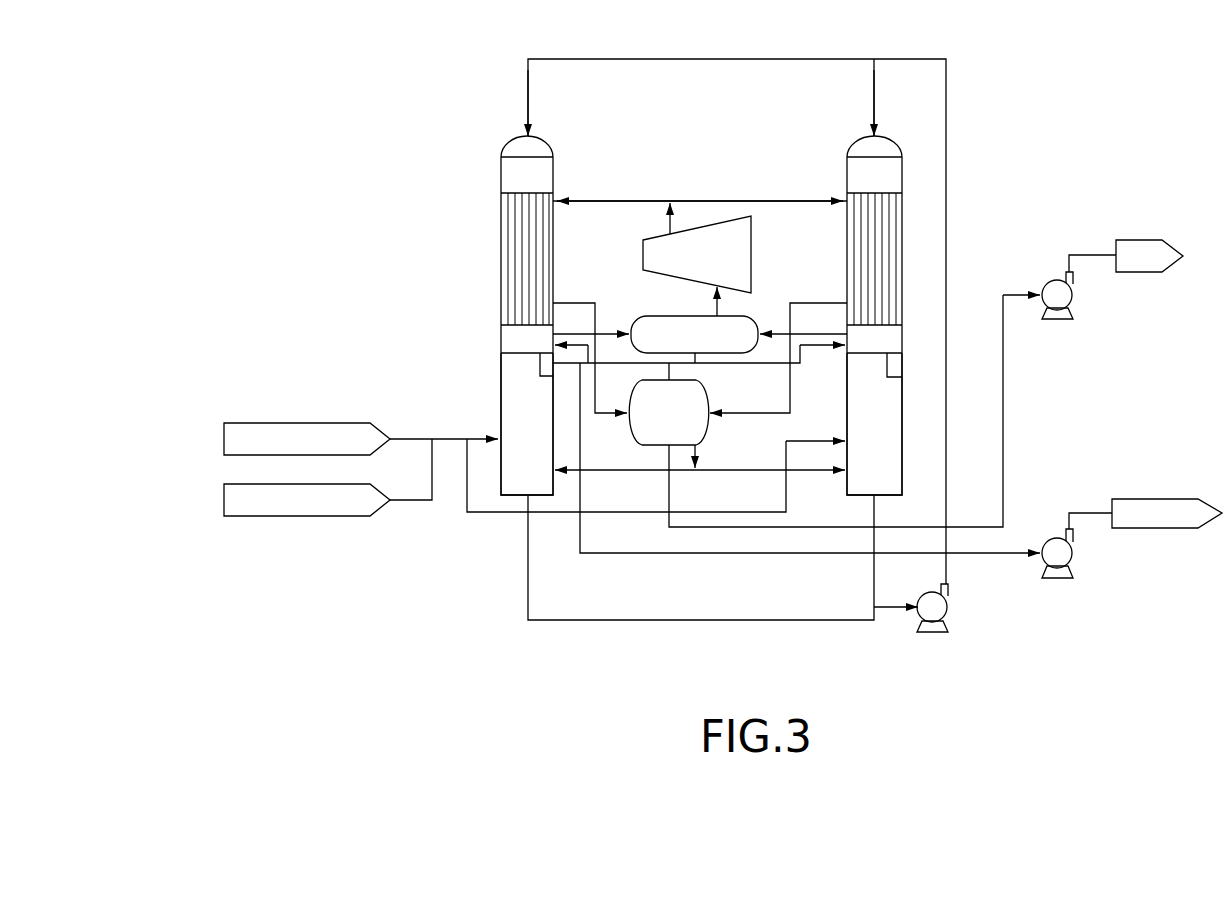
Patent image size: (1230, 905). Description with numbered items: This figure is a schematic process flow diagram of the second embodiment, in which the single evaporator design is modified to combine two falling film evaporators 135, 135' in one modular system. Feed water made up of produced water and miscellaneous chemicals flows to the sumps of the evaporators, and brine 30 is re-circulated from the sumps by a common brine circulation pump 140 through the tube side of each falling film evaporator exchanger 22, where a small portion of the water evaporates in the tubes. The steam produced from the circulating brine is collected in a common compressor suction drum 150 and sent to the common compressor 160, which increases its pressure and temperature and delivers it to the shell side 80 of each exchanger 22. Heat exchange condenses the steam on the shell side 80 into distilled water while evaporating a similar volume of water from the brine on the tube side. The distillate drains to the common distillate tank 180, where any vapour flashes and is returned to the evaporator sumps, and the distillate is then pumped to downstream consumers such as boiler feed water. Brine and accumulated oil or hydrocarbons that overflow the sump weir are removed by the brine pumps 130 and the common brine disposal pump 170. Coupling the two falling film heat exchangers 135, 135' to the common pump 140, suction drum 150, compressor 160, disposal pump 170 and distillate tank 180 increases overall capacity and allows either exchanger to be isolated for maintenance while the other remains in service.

The falling film evaporator exchanger 22 is at (505, 238).
The brine 30 is at (737, 339).
The shell side 80 is at (700, 183).
The brine pumps 130 is at (1073, 285).
The falling film evaporator 135 is at (505, 434).
The falling film evaporator 135' is at (802, 424).
The common brine circulation pump 140 is at (958, 603).
The common compressor suction drum 150 is at (645, 315).
The compressor 160 is at (720, 222).
The common brine disposal pump 170 is at (1075, 562).
The common distillate tank 180 is at (648, 447).